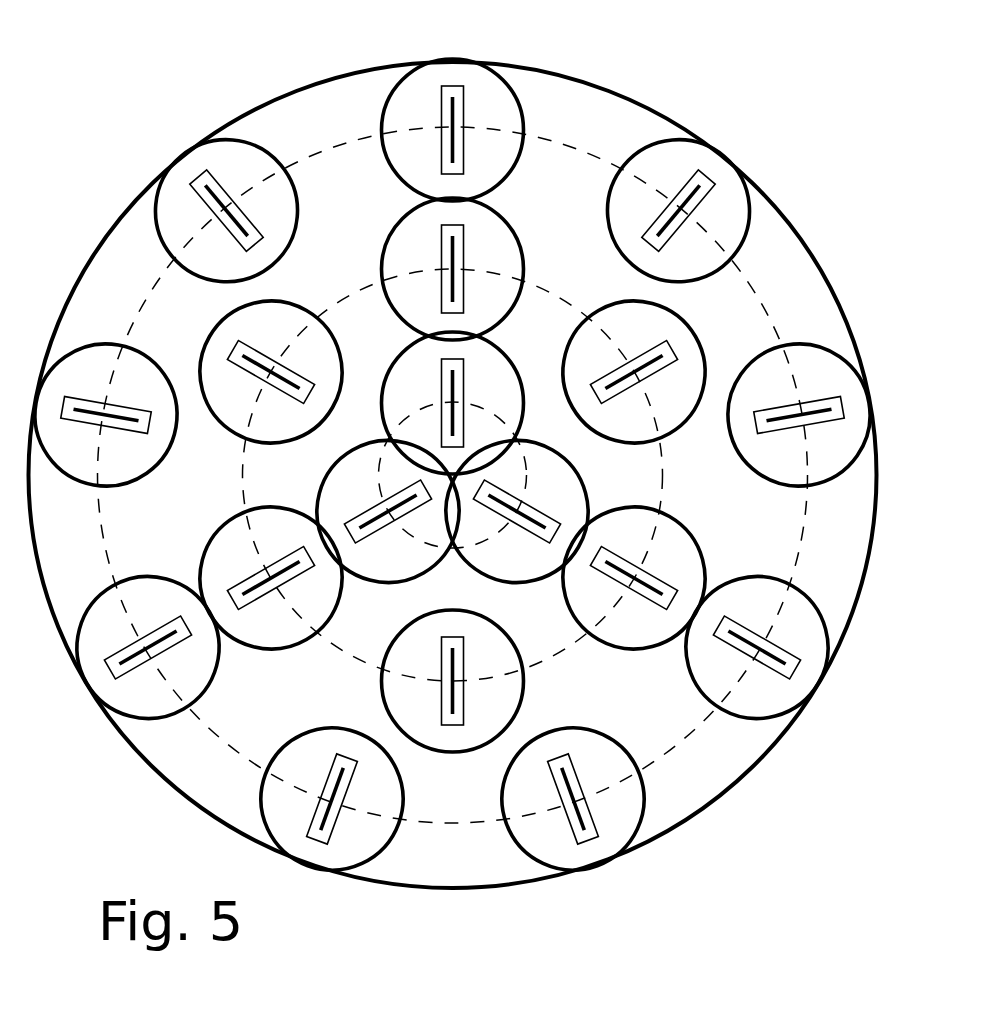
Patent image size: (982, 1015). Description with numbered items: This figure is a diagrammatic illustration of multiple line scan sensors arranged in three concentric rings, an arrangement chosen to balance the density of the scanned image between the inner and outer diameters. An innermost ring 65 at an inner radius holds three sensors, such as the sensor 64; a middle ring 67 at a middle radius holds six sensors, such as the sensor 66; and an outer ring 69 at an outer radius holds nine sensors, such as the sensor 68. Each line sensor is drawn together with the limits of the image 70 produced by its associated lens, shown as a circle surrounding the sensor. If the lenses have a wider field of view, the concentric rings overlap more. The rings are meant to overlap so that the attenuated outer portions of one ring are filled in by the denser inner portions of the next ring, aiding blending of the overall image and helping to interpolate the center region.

The sensor 64 is at (542, 512).
The innermost ring 65 is at (511, 412).
The sensor 66 is at (263, 358).
The middle ring 67 is at (562, 292).
The sensor 68 is at (216, 180).
The outer ring 69 is at (556, 130).
The limits of the image 70 is at (727, 217).